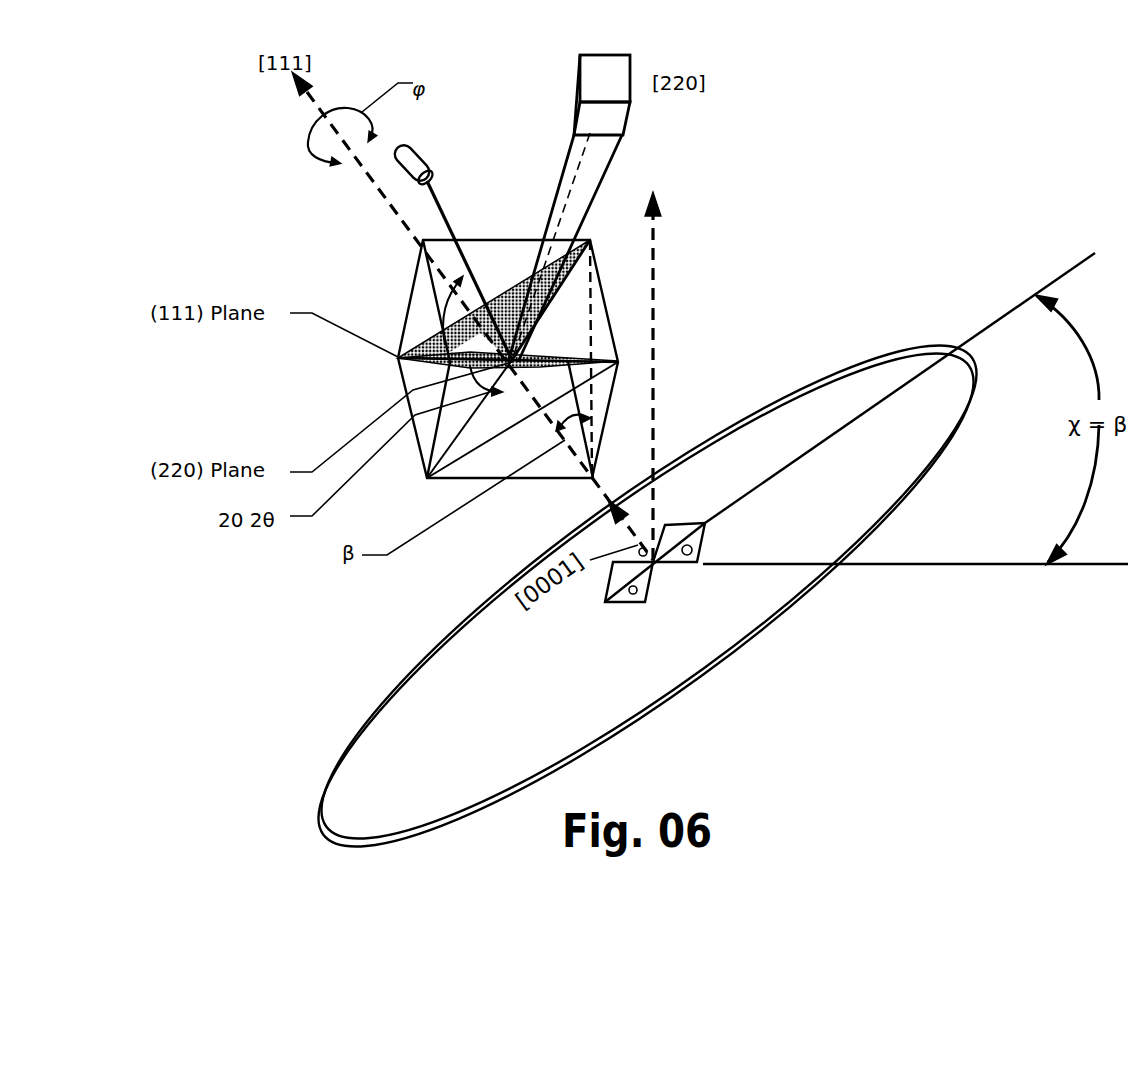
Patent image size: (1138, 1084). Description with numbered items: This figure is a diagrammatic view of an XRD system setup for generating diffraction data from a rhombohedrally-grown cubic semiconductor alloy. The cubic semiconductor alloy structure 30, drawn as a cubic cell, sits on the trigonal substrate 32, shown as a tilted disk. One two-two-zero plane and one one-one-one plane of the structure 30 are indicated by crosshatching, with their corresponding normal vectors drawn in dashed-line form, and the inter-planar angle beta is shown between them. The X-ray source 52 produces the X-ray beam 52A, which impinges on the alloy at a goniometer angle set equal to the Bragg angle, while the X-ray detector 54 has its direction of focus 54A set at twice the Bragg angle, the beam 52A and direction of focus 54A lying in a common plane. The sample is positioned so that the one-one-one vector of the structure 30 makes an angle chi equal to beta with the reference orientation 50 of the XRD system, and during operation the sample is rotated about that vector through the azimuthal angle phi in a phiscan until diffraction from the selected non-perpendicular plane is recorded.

The cubic semiconductor alloy structure 30 is at (434, 359).
The trigonal substrate 32 is at (612, 595).
The reference orientation 50 is at (694, 376).
The X-ray source 52 is at (621, 189).
The X-ray beam 52A is at (631, 237).
The X-ray detector 54 is at (418, 140).
The direction of focus 54A is at (474, 258).